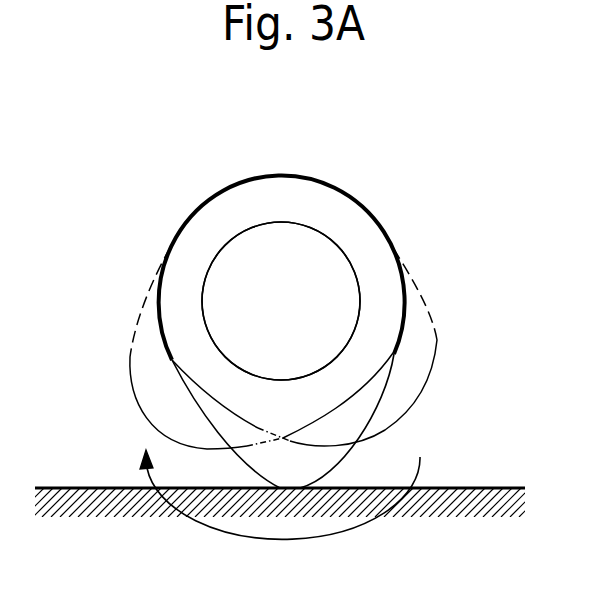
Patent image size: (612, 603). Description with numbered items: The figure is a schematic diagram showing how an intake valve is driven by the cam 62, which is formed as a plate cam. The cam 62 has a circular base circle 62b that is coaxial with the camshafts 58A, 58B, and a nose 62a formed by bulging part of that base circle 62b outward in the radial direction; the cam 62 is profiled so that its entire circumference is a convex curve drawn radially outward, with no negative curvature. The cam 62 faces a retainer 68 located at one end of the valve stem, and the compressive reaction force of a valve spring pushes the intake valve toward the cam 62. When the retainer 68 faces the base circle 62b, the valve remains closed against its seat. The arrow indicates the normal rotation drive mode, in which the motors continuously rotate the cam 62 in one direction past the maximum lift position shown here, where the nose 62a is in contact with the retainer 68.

The cam 62 is at (367, 260).
The nose 62a is at (282, 488).
The base circle 62b is at (198, 207).
The camshaft 58A is at (273, 250).
The camshaft 58B is at (281, 301).
The retainer 68 is at (465, 488).